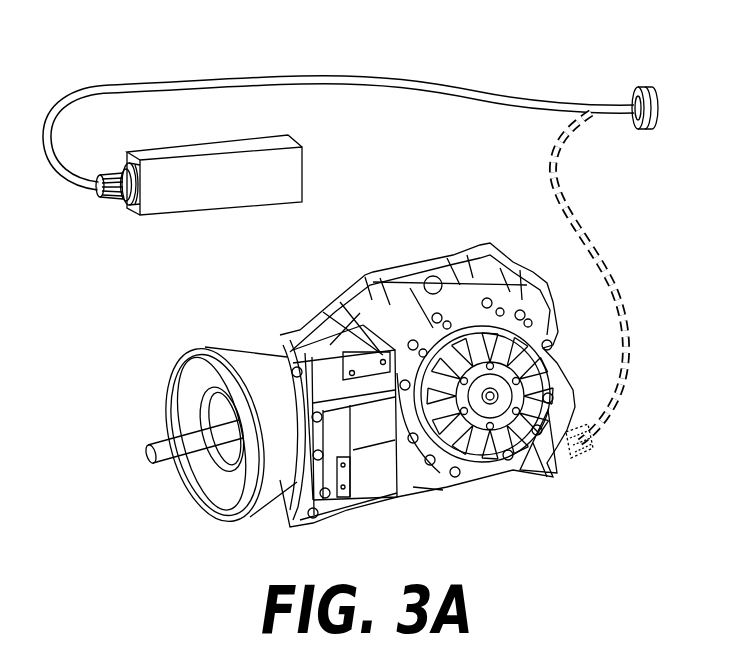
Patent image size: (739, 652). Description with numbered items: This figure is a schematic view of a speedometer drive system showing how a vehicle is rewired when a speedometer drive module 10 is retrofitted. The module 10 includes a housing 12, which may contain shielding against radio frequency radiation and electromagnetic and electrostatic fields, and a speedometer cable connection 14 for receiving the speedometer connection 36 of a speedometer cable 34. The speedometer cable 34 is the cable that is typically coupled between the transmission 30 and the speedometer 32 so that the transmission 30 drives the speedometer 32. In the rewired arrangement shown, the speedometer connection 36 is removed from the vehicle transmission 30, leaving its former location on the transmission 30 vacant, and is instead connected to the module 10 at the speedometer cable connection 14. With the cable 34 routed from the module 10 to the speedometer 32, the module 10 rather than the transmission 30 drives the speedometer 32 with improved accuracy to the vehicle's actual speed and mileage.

The speedometer drive module 10 is at (212, 191).
The housing 12 is at (198, 192).
The speedometer cable connection 14 is at (118, 204).
The transmission 30 is at (488, 484).
The speedometer 32 is at (648, 86).
The speedometer cable 34 is at (335, 74).
The speedometer connection 36 is at (105, 159).